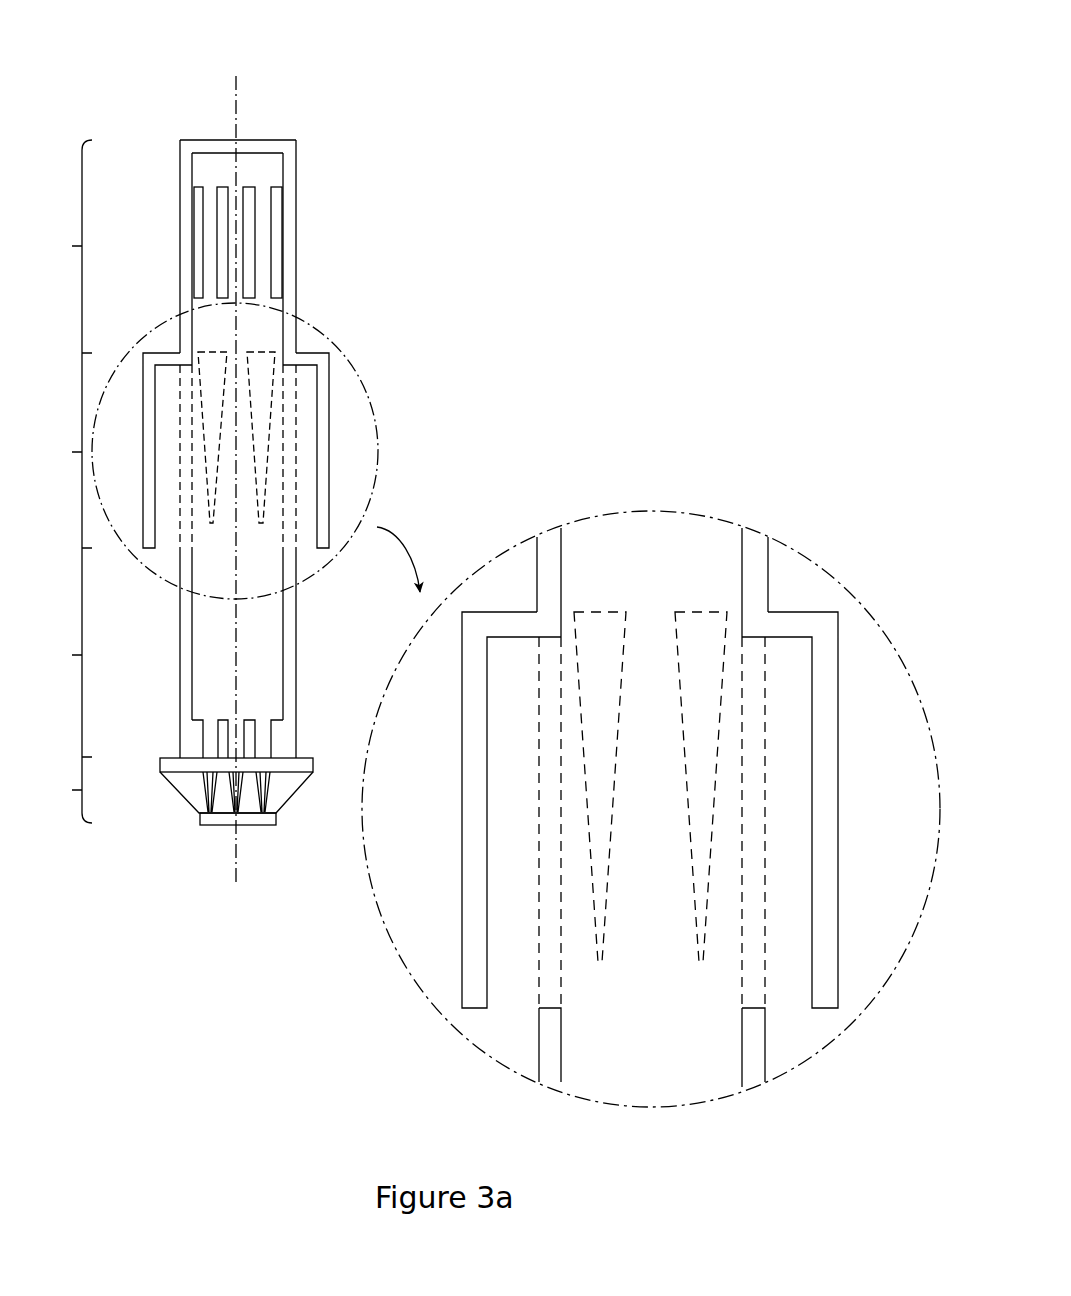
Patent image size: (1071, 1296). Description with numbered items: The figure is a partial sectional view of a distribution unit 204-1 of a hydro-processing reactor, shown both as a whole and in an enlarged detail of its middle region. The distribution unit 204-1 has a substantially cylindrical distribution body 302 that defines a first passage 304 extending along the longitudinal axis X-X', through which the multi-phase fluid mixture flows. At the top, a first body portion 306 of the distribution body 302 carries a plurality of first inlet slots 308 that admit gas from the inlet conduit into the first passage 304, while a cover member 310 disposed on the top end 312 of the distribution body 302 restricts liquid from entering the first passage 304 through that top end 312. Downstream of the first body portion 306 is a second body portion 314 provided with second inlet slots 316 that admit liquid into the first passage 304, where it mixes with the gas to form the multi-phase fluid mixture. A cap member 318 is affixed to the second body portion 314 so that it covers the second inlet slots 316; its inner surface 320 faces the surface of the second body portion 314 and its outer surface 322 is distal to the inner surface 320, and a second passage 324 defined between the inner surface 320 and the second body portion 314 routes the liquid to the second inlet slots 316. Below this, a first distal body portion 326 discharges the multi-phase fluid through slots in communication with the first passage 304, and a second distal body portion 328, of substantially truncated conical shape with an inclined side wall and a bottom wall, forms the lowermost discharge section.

The distribution unit 204-1 is at (194, 58).
The distribution body 302 is at (297, 150).
The first passage 304 is at (242, 174).
The first body portion 306 is at (62, 261).
The first inlet slots 308 is at (223, 217).
The cover member 310 is at (282, 146).
The top end 312 is at (190, 127).
The second body portion 314 is at (62, 466).
The second inlet slots 316 is at (707, 627).
The cap member 318 is at (814, 658).
The inner surface 320 is at (489, 950).
The outer surface 322 is at (840, 972).
The second passage 324 is at (518, 900).
The first distal body portion 326 is at (62, 667).
The second distal body portion 328 is at (62, 804).